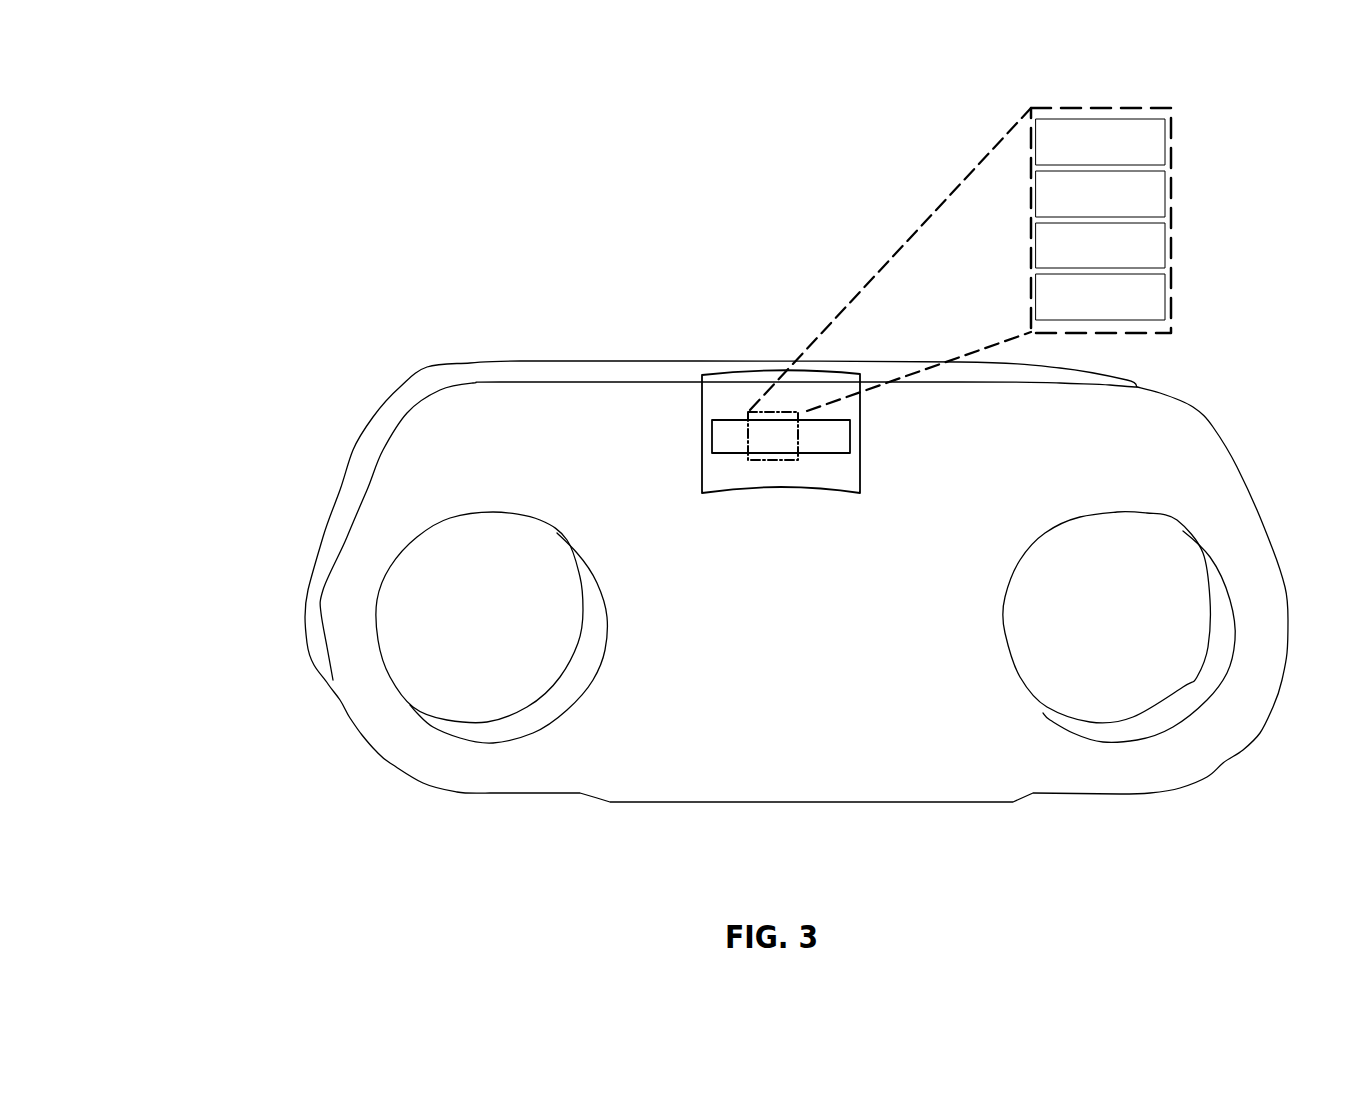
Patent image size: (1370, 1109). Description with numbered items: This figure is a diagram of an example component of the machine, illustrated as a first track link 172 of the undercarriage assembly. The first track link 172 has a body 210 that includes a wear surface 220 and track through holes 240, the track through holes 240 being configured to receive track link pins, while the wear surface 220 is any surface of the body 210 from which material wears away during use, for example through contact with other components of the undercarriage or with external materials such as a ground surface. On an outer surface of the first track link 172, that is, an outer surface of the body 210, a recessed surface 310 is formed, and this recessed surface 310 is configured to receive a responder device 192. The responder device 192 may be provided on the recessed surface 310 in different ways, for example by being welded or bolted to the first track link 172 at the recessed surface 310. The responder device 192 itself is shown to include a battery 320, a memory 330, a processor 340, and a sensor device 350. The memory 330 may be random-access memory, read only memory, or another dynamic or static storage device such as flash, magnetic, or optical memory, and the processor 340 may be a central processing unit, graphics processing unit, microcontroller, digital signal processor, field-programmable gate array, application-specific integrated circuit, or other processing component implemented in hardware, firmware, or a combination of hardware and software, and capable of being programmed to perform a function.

The first track link 172 is at (281, 52).
The body 210 is at (367, 525).
The wear surface 220 is at (631, 365).
The track through holes 240 is at (404, 648).
The recessed surface 310 is at (710, 477).
The responder device 192 is at (840, 436).
The battery 320 is at (1100, 142).
The memory 330 is at (1100, 194).
The processor 340 is at (1100, 245).
The sensor device 350 is at (1100, 297).